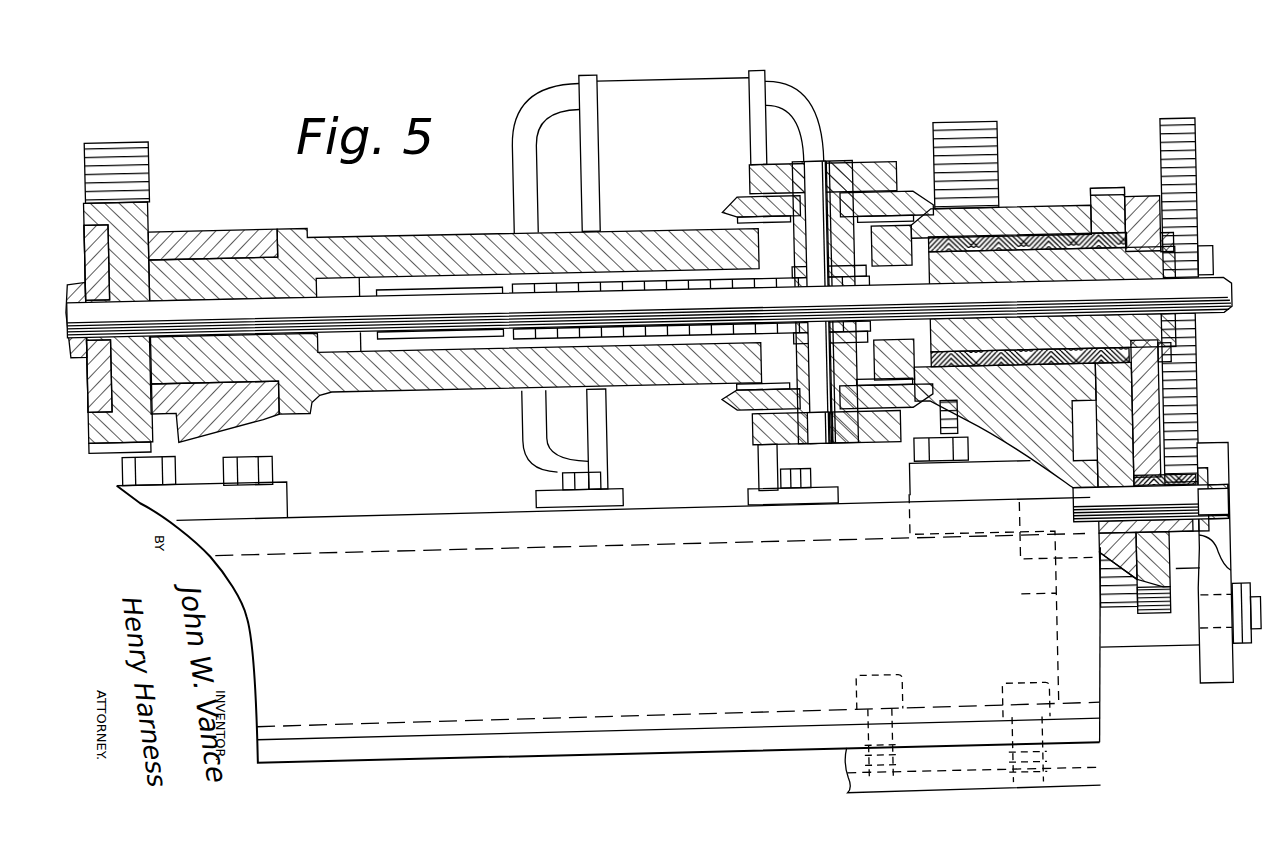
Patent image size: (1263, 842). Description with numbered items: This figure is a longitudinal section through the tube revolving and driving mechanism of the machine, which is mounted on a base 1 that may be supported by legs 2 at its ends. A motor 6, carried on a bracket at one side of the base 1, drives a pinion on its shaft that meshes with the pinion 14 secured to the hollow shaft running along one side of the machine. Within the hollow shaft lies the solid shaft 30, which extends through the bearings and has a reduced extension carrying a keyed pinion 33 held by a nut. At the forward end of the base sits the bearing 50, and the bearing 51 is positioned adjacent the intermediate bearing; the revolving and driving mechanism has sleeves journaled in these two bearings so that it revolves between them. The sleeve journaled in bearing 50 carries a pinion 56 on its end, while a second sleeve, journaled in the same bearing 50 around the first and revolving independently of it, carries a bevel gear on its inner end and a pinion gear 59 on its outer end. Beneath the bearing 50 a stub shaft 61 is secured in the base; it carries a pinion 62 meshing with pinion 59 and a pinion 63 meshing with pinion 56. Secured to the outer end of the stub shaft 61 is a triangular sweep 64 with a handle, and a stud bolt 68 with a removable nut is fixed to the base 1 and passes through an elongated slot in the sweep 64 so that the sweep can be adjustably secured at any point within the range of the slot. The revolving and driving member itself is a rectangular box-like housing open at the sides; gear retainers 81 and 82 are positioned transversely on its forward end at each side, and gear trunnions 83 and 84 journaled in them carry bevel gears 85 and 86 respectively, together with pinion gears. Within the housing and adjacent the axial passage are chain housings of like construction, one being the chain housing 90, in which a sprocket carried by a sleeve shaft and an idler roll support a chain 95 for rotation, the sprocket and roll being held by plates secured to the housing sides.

The base 1 is at (682, 707).
The legs 2 is at (1090, 782).
The motor 6 is at (679, 88).
The pinion 14 is at (995, 134).
The solid shaft 30 is at (441, 300).
The pinion 33 is at (1199, 185).
The bearing 50 is at (247, 230).
The bearing 51 is at (1065, 214).
The pinion 56 is at (1142, 207).
The pinion gear 59 is at (1112, 197).
The stub shaft 61 is at (1210, 512).
The pinion 62 is at (1118, 618).
The pinion 63 is at (1153, 626).
The triangular sweep 64 is at (1216, 592).
The stud bolt 68 is at (1238, 656).
The gear retainer 81 is at (879, 168).
The gear retainer 82 is at (883, 414).
The gear trunnion 83 is at (831, 170).
The gear trunnion 84 is at (841, 448).
The bevel gear 85 is at (736, 199).
The bevel gear 86 is at (720, 414).
The chain housing 90 is at (419, 342).
The chain 95 is at (528, 340).